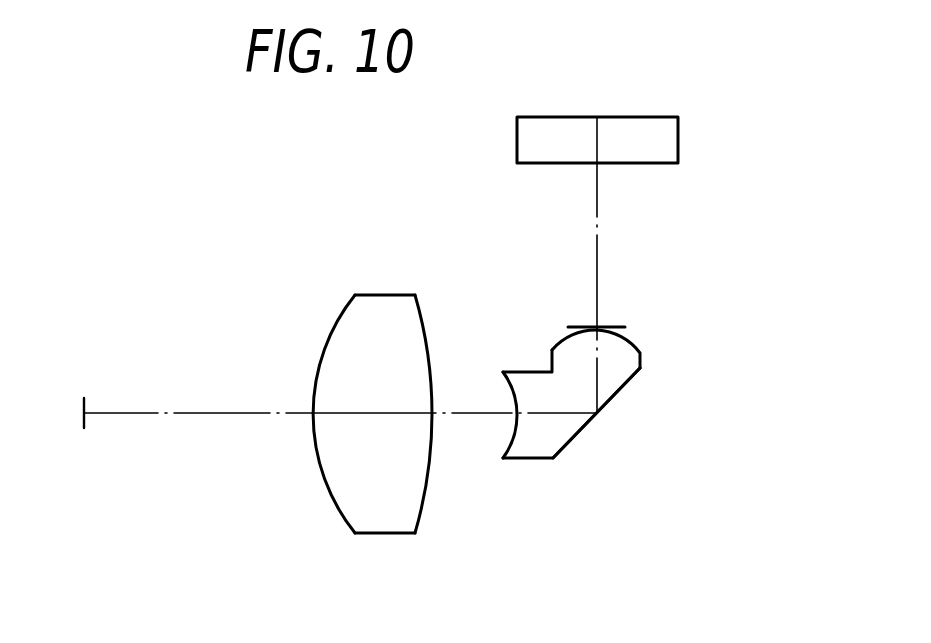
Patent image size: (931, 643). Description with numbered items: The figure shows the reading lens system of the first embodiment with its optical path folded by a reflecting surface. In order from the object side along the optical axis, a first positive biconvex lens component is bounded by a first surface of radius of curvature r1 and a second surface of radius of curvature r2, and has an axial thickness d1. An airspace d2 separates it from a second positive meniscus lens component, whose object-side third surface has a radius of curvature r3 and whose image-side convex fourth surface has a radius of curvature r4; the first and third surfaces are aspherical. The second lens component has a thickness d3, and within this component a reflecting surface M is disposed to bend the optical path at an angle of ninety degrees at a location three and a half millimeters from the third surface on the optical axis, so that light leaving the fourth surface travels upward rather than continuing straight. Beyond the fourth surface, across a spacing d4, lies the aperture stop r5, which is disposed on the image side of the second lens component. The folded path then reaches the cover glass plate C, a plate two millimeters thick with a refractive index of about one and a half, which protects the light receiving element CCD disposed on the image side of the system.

The radius of curvature of first surface r1 is at (335, 323).
The radius of curvature of second surface r2 is at (423, 320).
The thickness of first lens component d1 is at (368, 413).
The airspace between lens components d2 is at (470, 415).
The radius of curvature of third surface r3 is at (502, 387).
The thickness of second lens component d3 is at (570, 417).
The radius of curvature of fourth surface r4 is at (567, 337).
The aperture stop r5 is at (577, 323).
The airspace to aperture stop d4 is at (598, 330).
The reflecting surface M is at (627, 390).
The cover glass plate C is at (678, 143).